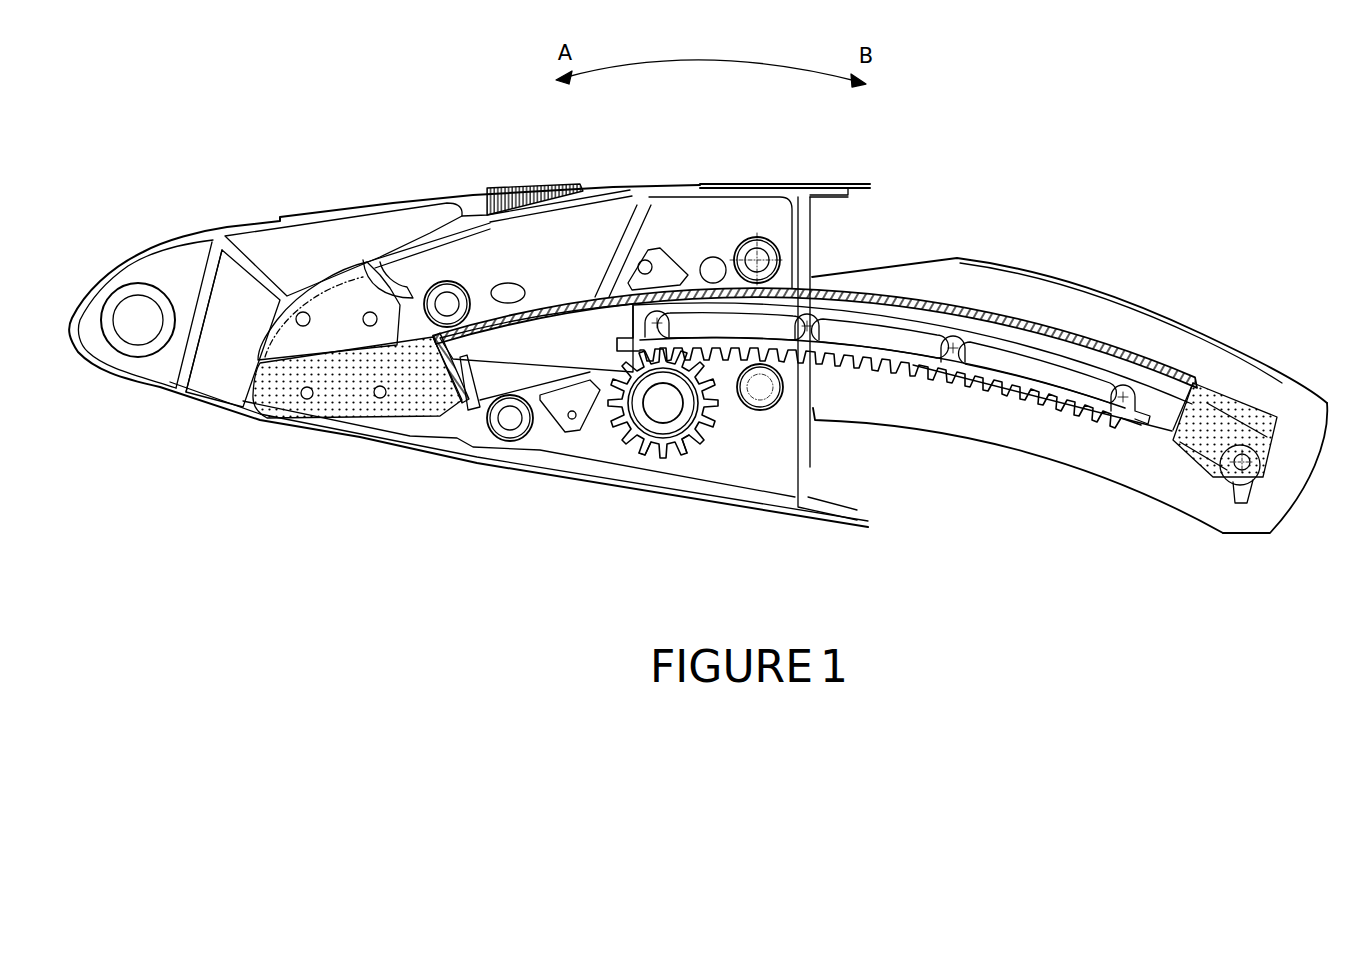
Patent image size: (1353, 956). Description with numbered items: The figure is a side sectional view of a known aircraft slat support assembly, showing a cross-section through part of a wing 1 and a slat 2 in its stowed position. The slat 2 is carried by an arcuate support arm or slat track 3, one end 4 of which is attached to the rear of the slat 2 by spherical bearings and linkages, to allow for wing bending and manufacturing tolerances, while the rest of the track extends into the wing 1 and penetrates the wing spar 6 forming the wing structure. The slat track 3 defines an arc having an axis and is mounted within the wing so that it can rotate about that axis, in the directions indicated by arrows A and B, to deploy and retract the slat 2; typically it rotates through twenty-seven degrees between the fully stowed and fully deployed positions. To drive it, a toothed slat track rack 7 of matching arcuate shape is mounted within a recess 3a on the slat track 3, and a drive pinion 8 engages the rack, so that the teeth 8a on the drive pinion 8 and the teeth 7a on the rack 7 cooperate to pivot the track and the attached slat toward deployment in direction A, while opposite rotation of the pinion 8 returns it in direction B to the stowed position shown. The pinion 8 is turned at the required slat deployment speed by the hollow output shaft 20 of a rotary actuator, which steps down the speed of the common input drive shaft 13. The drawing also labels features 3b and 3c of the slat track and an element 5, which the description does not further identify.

The wing 1 is at (846, 183).
The slat 2 is at (175, 240).
The slat track 3 is at (997, 327).
The recess 3a is at (1167, 435).
The arm upper edge 3b is at (1140, 346).
The arm lower edge 3c is at (1183, 463).
The end of the slat track 4 is at (340, 417).
The support plate 5 is at (616, 255).
The wing spar 6 is at (800, 247).
The slat track rack 7 is at (993, 380).
The teeth on the slat track rack 7a is at (913, 360).
The drive pinion 8 is at (640, 443).
The teeth on the drive pinion 8a is at (676, 434).
The common input drive shaft 13 is at (650, 413).
The output shaft 20 is at (657, 440).